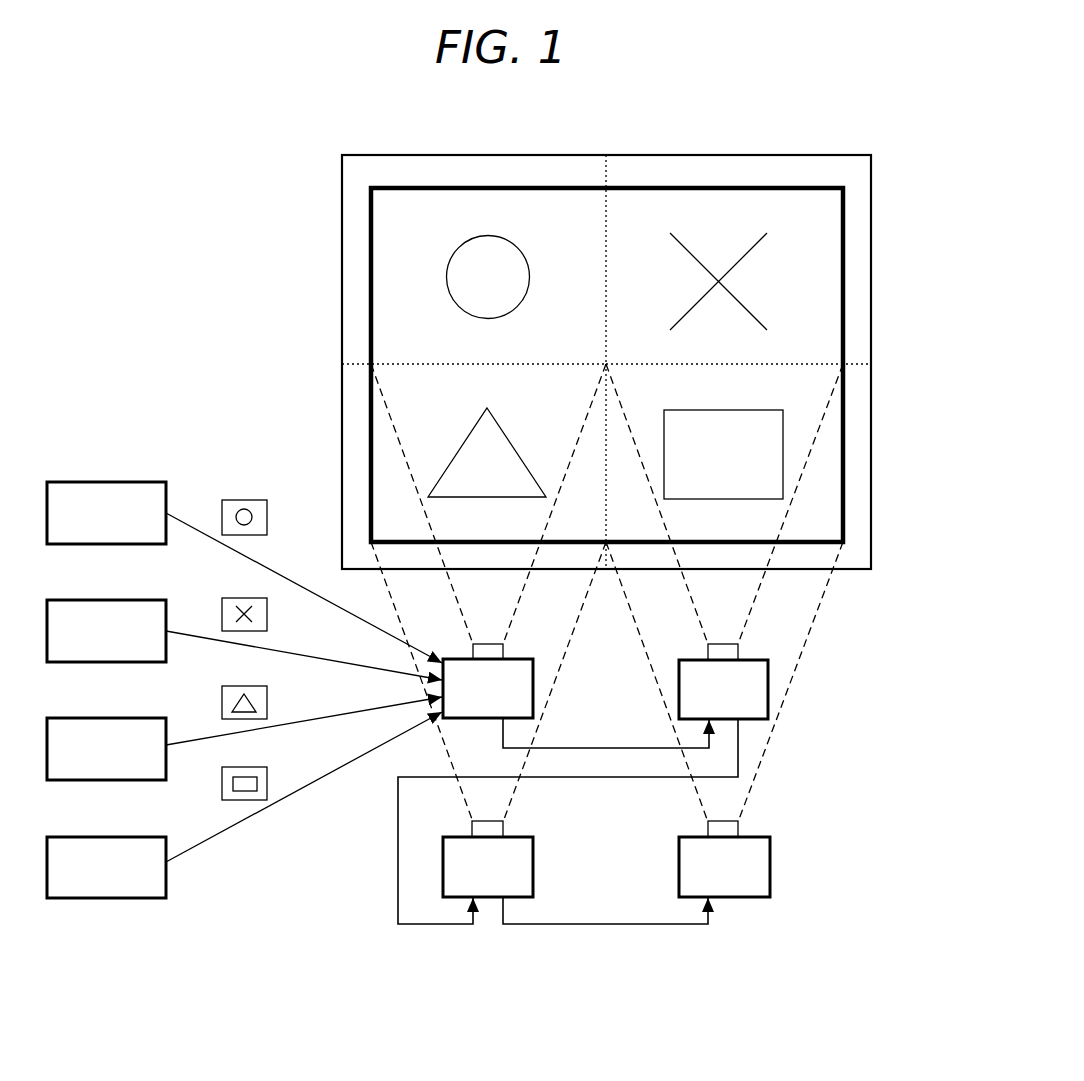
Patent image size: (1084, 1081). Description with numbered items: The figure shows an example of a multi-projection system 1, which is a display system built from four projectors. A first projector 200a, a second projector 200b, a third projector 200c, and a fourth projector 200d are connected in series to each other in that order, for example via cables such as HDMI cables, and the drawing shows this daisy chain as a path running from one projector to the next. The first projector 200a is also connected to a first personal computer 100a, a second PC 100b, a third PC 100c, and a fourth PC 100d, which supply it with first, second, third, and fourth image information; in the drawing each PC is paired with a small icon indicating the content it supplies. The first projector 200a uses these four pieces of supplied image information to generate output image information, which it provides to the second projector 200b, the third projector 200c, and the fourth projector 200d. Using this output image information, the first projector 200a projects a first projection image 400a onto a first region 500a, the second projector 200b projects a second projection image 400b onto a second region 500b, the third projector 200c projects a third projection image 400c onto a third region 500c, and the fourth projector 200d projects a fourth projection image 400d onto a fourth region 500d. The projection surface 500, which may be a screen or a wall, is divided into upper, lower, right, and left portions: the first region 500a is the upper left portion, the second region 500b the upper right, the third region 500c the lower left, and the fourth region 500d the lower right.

The multi-projection system 1 is at (870, 612).
The first personal computer 100a is at (100, 482).
The second PC 100b is at (100, 600).
The third PC 100c is at (100, 718).
The fourth PC 100d is at (100, 837).
The first projector 200a is at (533, 697).
The second projector 200b is at (768, 697).
The third projector 200c is at (533, 875).
The fourth projector 200d is at (770, 875).
The first projection image 400a is at (402, 288).
The second projection image 400b is at (815, 288).
The third projection image 400c is at (402, 462).
The fourth projection image 400d is at (815, 468).
The projection surface 500 is at (342, 174).
The first region 500a is at (353, 241).
The second region 500b is at (857, 241).
The third region 500c is at (355, 415).
The fourth region 500d is at (857, 409).